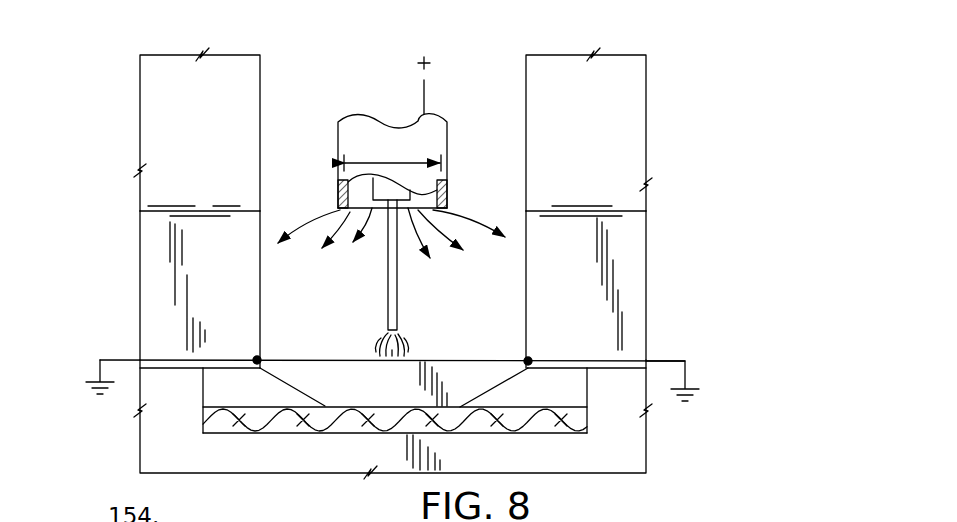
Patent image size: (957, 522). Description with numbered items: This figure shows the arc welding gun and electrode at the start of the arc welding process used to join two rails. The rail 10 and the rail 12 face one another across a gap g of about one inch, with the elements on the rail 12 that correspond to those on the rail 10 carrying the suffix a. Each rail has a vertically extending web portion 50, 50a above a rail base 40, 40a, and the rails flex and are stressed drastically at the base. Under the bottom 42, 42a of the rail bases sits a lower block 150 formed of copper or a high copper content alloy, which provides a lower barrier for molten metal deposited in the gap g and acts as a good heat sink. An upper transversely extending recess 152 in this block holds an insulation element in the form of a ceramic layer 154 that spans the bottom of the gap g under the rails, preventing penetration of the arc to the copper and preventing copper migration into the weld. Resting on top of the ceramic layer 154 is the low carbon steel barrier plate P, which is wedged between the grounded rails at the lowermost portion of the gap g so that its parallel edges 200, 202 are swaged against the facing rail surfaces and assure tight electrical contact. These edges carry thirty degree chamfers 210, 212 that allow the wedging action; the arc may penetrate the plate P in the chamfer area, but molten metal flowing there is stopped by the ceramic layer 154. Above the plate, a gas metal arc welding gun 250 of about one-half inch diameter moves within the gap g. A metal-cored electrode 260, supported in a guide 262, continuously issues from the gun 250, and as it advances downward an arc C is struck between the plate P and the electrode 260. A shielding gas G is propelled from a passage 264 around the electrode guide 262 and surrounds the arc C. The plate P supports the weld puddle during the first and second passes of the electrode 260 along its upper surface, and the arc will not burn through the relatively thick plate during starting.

The rail 10 is at (624, 54).
The rail 12 is at (181, 52).
The gap g is at (477, 97).
The web portion 50 is at (625, 88).
The web portion 50a is at (160, 103).
The rail base 40 is at (641, 262).
The rail base 40a is at (145, 256).
The gas metal arc welding gun 250 is at (447, 140).
The passage 264 is at (357, 192).
The guide 262 is at (403, 193).
The metal-cored electrode 260 is at (398, 300).
The arc C is at (378, 342).
The shielding gas G is at (300, 227).
The barrier plate P is at (441, 358).
The edge 200 is at (529, 358).
The edge 202 is at (257, 357).
The chamfer 212 is at (294, 391).
The chamfer 210 is at (485, 394).
The bottom of rail base 42a is at (220, 370).
The bottom of rail base 42 is at (562, 369).
The upper transversely extending recess 152 is at (586, 386).
The ceramic layer 154 is at (350, 426).
The lower block 150 is at (641, 452).